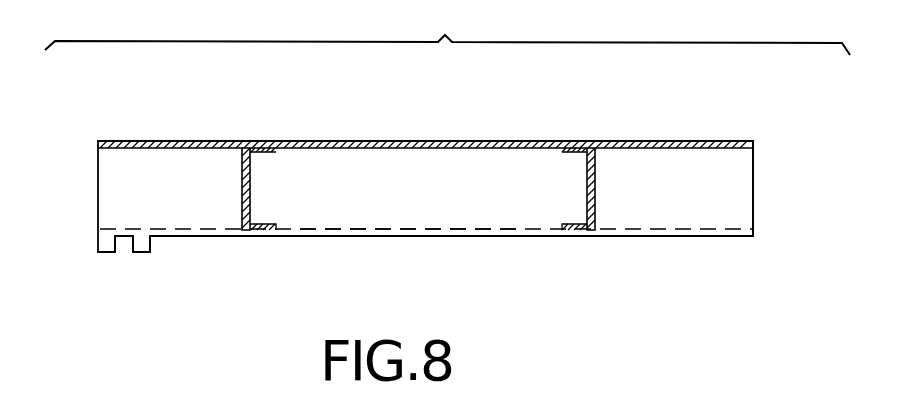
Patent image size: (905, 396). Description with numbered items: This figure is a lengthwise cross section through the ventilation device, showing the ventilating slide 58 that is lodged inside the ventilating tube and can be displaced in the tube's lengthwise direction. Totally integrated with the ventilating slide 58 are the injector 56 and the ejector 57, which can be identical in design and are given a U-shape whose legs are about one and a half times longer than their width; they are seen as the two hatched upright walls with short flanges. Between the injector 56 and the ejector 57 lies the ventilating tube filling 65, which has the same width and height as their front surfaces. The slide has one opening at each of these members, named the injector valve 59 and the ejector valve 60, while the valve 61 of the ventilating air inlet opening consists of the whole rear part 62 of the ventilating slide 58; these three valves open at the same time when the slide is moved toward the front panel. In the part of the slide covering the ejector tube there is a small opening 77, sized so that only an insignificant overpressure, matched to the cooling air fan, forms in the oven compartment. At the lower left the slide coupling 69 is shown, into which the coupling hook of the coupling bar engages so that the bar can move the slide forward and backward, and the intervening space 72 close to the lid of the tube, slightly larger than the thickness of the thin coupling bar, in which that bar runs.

The ventilating slide 58 is at (447, 27).
The small opening 77 is at (142, 141).
The ejector valve 60 is at (220, 141).
The injector valve 59 is at (623, 141).
The valve of the inlet opening 61 is at (753, 143).
The rear part of the ventilating slide 62 is at (753, 207).
The ejector 57 is at (242, 193).
The injector 56 is at (595, 193).
The ventilating tube filling 65 is at (412, 200).
The slide coupling 69 is at (163, 270).
The intervening space 72 is at (123, 244).